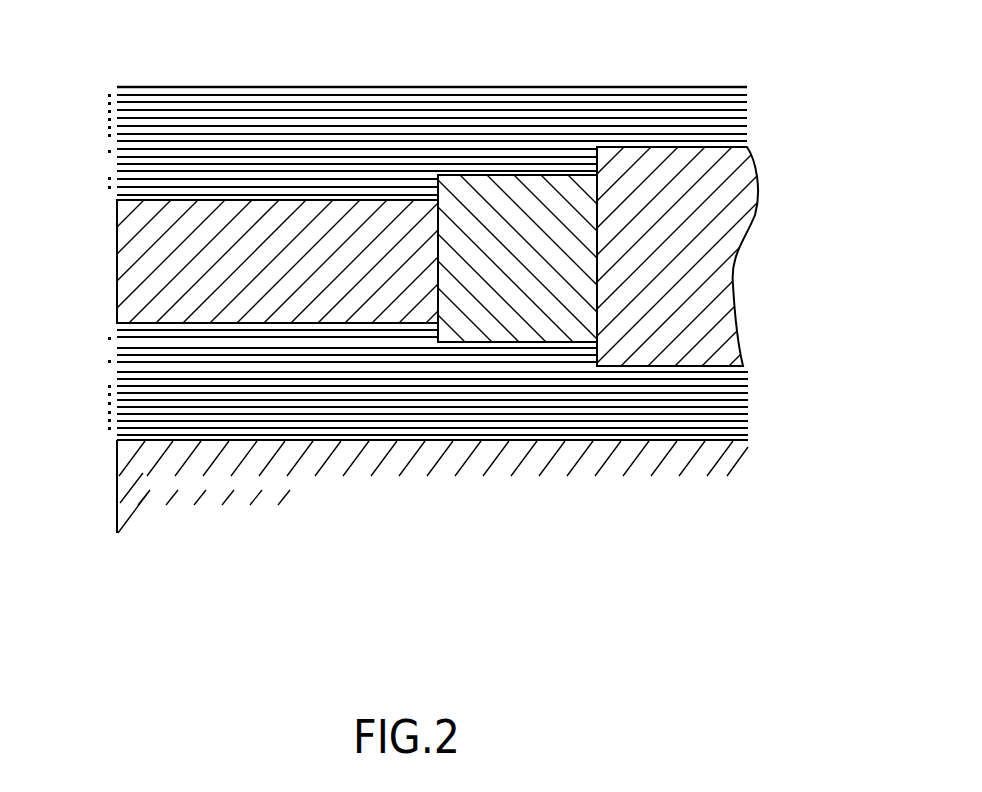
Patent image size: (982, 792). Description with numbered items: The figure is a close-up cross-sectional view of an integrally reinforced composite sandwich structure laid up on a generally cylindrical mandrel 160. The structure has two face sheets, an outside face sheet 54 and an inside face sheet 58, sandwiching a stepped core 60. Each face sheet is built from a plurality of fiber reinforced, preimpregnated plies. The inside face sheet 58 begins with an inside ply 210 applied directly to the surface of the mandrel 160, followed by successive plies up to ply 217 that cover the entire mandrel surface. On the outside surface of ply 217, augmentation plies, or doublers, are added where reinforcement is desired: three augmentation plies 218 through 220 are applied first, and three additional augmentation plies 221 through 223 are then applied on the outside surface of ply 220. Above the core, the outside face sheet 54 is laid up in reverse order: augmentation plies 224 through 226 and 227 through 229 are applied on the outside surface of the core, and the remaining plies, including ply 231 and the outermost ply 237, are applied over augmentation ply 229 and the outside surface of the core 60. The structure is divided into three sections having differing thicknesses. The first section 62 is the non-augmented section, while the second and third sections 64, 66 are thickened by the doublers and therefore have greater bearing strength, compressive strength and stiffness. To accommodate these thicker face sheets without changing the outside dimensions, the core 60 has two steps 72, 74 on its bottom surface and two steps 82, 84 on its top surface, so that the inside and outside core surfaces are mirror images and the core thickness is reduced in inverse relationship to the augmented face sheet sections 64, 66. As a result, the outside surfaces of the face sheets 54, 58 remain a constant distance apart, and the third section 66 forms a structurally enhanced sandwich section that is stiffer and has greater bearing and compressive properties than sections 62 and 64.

The face sheet 54 is at (752, 85).
The face sheet 58 is at (752, 372).
The core 60 is at (117, 255).
The first section 62 is at (747, 71).
The second section 64 is at (597, 71).
The third section 66 is at (440, 72).
The step 72 is at (593, 343).
The step 74 is at (437, 323).
The step 82 is at (593, 173).
The step 84 is at (437, 195).
The mandrel 160 is at (288, 481).
The inside ply 210 is at (117, 435).
The ply 217 is at (117, 372).
The augmentation ply 218 is at (117, 362).
The augmentation ply 220 is at (117, 355).
The augmentation ply 221 is at (117, 348).
The augmentation ply 223 is at (117, 330).
The augmentation ply 224 is at (117, 200).
The augmentation ply 226 is at (117, 164).
The augmentation ply 227 is at (117, 171).
The augmentation ply 229 is at (117, 149).
The ply 231 is at (117, 127).
The ply 237 is at (117, 87).